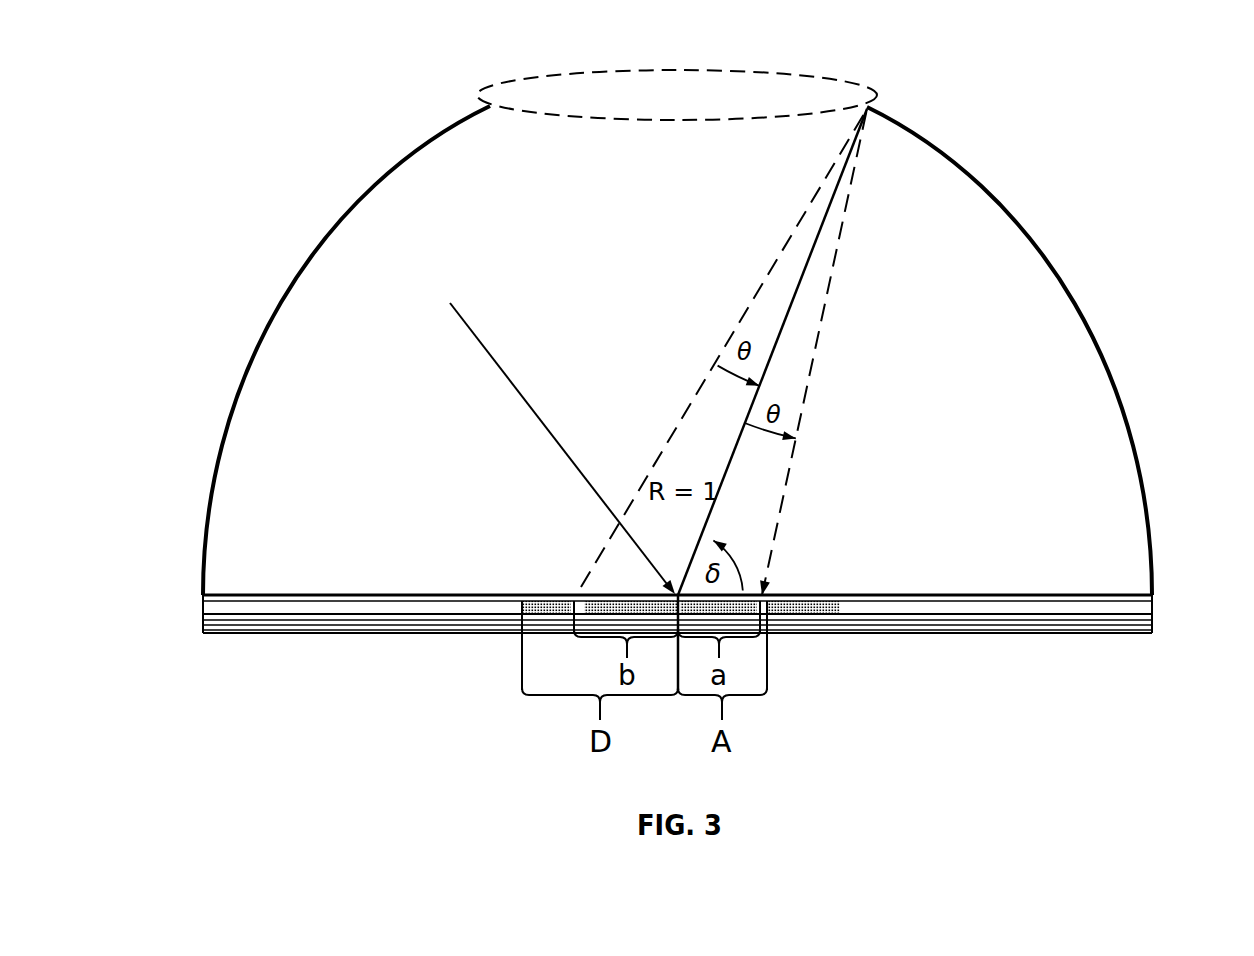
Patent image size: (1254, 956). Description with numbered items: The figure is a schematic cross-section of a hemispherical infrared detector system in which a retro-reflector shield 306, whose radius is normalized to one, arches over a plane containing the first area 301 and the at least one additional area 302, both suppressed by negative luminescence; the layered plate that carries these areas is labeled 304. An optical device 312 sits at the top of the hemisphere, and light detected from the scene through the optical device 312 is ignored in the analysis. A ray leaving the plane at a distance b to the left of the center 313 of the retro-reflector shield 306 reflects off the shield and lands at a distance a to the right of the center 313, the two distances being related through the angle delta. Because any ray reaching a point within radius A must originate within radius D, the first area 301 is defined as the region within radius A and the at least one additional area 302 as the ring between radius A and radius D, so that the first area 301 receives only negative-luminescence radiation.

The first area 301 is at (612, 607).
The at least one additional area 302 is at (527, 607).
The substrate layer stack 304 is at (1157, 597).
The retro-reflector shield 306 is at (1023, 233).
The optical device 312 is at (813, 75).
The center 313 is at (550, 434).